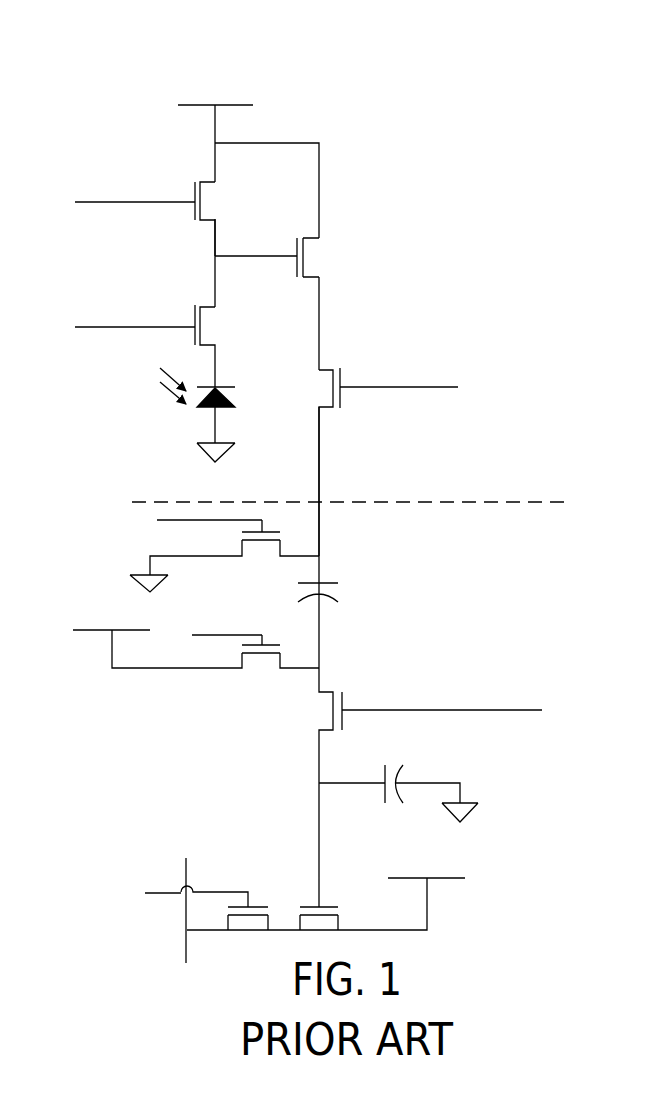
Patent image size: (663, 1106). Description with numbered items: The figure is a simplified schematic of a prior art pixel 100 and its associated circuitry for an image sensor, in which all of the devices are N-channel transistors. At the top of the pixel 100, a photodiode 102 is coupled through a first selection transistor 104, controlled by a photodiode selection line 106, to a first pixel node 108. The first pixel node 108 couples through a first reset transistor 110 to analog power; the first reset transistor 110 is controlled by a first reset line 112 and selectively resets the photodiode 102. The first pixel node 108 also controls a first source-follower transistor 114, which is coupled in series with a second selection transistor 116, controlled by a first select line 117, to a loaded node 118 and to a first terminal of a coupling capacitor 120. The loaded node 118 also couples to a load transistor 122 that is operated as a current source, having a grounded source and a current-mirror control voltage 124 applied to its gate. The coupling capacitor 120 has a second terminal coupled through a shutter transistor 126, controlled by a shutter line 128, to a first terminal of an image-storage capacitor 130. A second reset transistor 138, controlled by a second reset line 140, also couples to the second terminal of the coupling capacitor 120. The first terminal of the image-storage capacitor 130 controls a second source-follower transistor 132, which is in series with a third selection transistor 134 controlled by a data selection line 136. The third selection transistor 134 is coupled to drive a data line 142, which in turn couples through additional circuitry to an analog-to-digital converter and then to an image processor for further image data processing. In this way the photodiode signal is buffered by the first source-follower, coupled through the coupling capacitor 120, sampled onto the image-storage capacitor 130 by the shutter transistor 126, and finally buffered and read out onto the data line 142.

The pixel 100 is at (225, 98).
The photodiode 102 is at (200, 400).
The first selection transistor 104 is at (193, 302).
The photodiode selection line 106 is at (143, 327).
The first pixel node 108 is at (215, 250).
The first reset transistor 110 is at (200, 203).
The first reset line 112 is at (150, 202).
The first source-follower transistor 114 is at (310, 260).
The second selection transistor 116 is at (340, 382).
The first select line 117 is at (428, 387).
The loaded node 118 is at (319, 478).
The coupling capacitor 120 is at (338, 597).
The load transistor 122 is at (282, 550).
The current-mirror control voltage 124 is at (190, 522).
The shutter transistor 126 is at (340, 688).
The shutter line 128 is at (422, 700).
The image-storage capacitor 130 is at (392, 770).
The second source-follower transistor 132 is at (308, 900).
The third selection transistor 134 is at (247, 903).
The data selection line 136 is at (167, 893).
The second reset transistor 138 is at (272, 662).
The second reset line 140 is at (205, 633).
The data line 142 is at (185, 872).